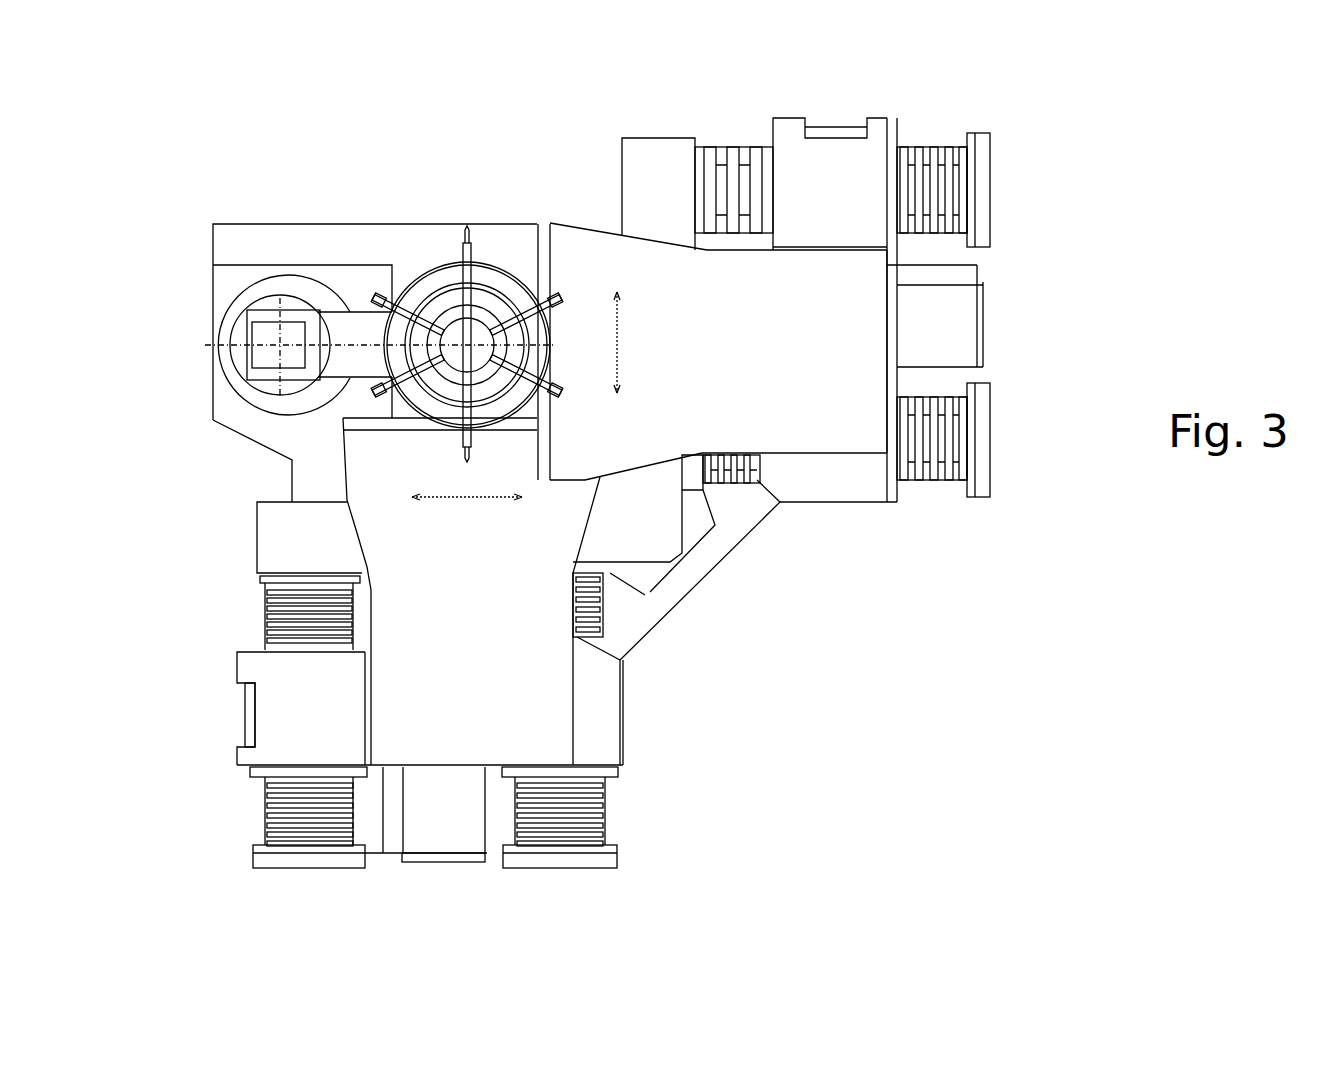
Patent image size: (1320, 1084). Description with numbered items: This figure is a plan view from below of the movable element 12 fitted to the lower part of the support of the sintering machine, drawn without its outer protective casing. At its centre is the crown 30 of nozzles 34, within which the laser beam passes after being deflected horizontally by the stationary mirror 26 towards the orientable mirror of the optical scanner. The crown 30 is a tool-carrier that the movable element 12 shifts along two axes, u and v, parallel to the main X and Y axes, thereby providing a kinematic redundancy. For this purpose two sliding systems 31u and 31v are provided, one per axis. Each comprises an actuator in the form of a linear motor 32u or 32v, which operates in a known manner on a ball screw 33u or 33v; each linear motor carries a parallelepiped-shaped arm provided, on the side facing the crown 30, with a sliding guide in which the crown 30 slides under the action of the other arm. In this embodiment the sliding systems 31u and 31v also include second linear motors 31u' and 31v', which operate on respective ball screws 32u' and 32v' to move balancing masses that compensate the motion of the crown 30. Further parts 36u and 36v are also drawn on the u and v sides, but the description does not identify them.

The movable element 12 is at (903, 657).
The stationary mirror 26 is at (260, 350).
The crown 30 is at (495, 267).
The nozzles 34 is at (407, 283).
The ball screw 33v is at (650, 297).
The sliding system 31v is at (796, 278).
The linear motor 32v is at (943, 156).
The upper outlet shaft 36v is at (883, 320).
The second linear motor 31v' is at (735, 610).
The ball screw 32v' is at (943, 478).
The ball screw 33u is at (400, 535).
The sliding system 31u is at (239, 708).
The linear motor 32u is at (240, 817).
The lower outlet stub 36u is at (455, 768).
The second linear motor 31u' is at (670, 669).
The ball screw 32u' is at (635, 817).